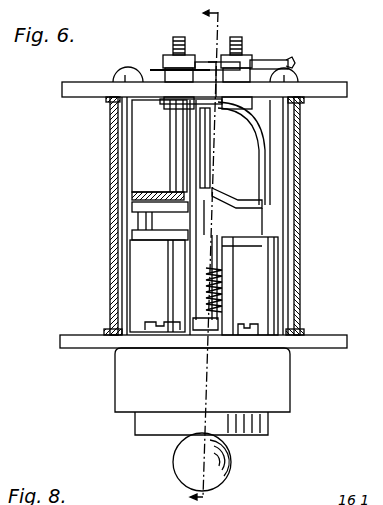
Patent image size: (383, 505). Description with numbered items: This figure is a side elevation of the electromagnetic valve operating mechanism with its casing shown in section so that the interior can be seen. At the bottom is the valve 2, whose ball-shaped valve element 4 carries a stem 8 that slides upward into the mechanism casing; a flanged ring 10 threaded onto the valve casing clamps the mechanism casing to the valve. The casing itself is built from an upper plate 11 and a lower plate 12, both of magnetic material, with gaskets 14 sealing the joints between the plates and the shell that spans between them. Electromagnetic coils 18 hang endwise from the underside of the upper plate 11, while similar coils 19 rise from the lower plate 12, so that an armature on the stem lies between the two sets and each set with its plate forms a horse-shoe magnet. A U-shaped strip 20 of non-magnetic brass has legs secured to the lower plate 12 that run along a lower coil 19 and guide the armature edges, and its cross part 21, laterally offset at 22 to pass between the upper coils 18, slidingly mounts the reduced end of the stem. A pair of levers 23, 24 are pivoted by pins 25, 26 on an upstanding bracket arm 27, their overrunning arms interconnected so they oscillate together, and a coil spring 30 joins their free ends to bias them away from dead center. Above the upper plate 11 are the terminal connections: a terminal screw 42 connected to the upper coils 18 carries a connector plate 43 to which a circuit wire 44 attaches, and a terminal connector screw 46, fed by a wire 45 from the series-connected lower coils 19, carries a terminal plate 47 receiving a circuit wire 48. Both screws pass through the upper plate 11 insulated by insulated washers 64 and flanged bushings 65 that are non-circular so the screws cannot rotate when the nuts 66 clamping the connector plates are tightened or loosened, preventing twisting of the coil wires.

The valve 2 is at (201, 423).
The valve element 4 is at (202, 462).
The stem 8 is at (172, 370).
The flanged ring 10 is at (202, 380).
The upper plate 11 is at (68, 88).
The lower plate 12 is at (86, 337).
The gaskets 14 is at (304, 102).
The electromagnetic coils 18 is at (195, 217).
The coils 19 is at (130, 274).
The strip 20 is at (252, 286).
The cross part 21 is at (211, 189).
The lateral offset 22 is at (245, 204).
The lever 23 is at (196, 258).
The lever 24 is at (182, 127).
The pin 25 is at (186, 222).
The pin 26 is at (186, 157).
The bracket arm 27 is at (188, 296).
The coil spring 30 is at (222, 284).
The terminal screw 42 is at (242, 42).
The connector plate 43 is at (268, 62).
The circuit wire 44 is at (296, 65).
The wire 45 is at (266, 147).
The terminal connector screw 46 is at (175, 40).
The terminal plate 47 is at (165, 66).
The circuit wire 48 is at (212, 60).
The insulated washers 64 is at (120, 72).
The flanged bushings 65 is at (160, 101).
The nuts 66 is at (168, 58).